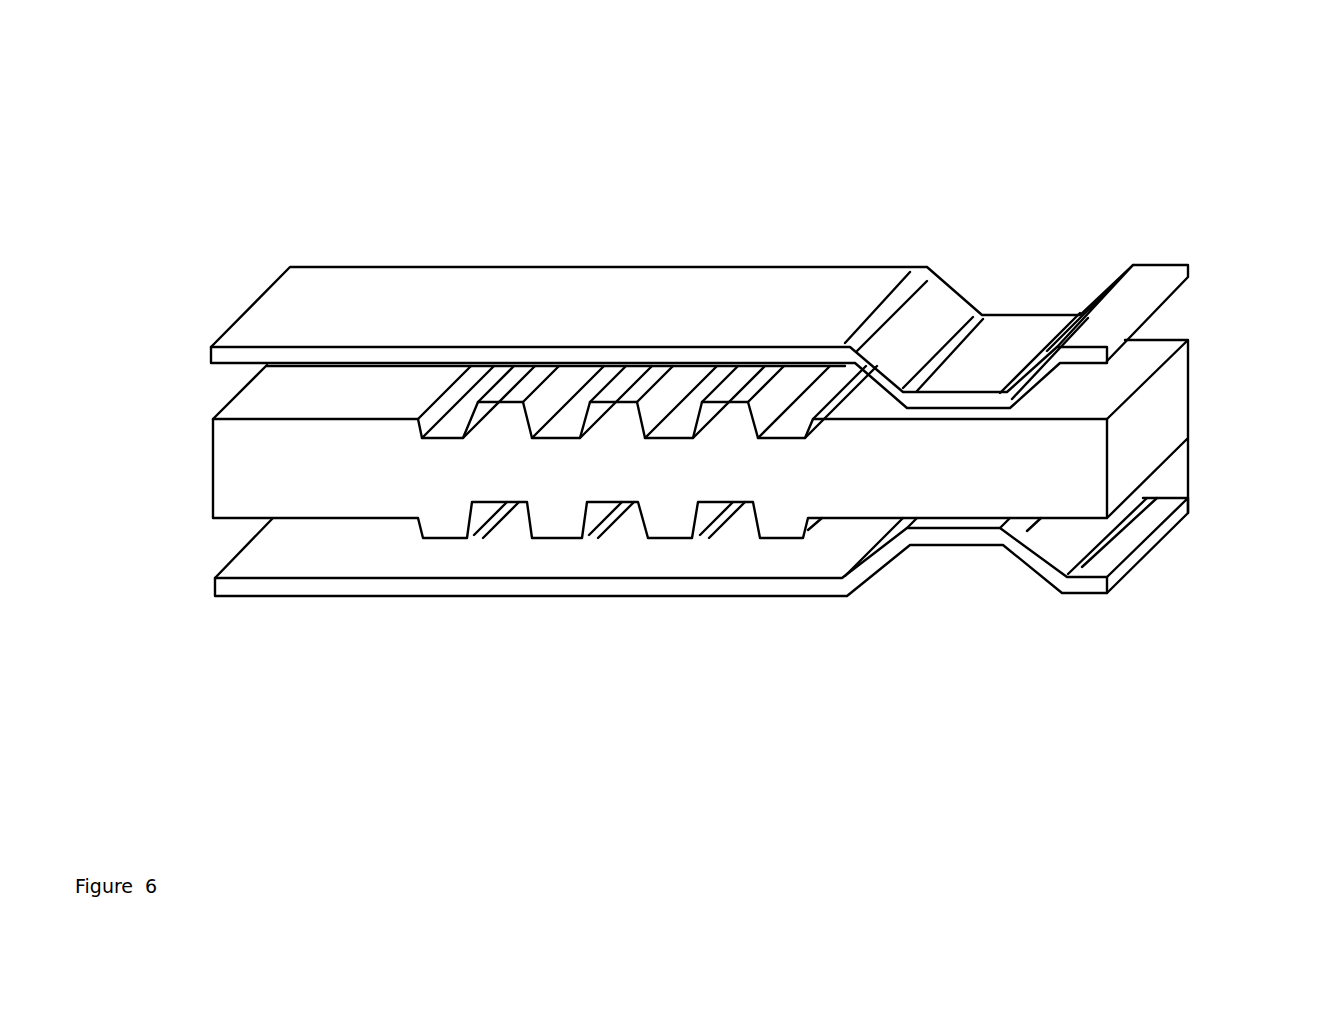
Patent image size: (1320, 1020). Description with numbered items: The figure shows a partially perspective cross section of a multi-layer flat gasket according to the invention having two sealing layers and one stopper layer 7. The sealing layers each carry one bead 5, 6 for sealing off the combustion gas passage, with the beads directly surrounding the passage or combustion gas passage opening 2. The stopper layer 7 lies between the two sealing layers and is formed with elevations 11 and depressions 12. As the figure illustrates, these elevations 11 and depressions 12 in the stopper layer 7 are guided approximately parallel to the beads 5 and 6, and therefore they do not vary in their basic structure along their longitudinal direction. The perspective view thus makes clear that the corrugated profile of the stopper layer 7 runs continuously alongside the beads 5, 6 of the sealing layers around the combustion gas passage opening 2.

The combustion gas passage opening 2 is at (735, 423).
The bead 5 is at (1005, 345).
The bead 6 is at (947, 547).
The stopper layer 7 is at (1152, 423).
The elevations 11 is at (740, 383).
The depressions 12 is at (452, 428).